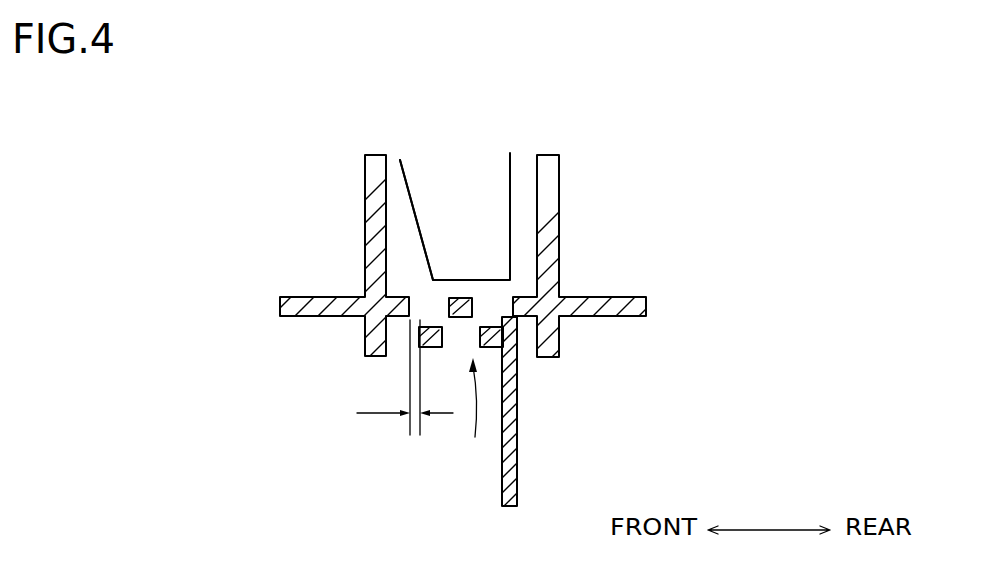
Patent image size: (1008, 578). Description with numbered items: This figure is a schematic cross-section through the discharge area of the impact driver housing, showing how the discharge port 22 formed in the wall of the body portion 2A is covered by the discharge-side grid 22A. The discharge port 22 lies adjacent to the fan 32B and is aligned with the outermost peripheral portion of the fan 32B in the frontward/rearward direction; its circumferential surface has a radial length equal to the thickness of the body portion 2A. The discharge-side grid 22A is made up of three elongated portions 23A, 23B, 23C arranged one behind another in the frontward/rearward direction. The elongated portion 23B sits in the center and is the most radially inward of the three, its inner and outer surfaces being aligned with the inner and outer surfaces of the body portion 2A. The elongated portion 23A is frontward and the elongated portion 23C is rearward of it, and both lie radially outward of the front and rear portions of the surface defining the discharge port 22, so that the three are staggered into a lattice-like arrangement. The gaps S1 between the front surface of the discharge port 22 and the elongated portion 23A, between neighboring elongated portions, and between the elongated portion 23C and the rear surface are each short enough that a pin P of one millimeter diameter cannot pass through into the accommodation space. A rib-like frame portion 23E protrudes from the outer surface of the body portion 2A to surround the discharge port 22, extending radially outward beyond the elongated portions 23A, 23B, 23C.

The body portion 2A is at (280, 303).
The discharge port 22 is at (483, 307).
The discharge-side grid 22A is at (468, 415).
The elongated portion 23A is at (425, 326).
The elongated portion 23B is at (460, 297).
The elongated portion 23C is at (490, 333).
The frame portion 23E is at (365, 355).
The fan 32B is at (423, 185).
The pin P is at (517, 418).
The gap S1 is at (405, 377).